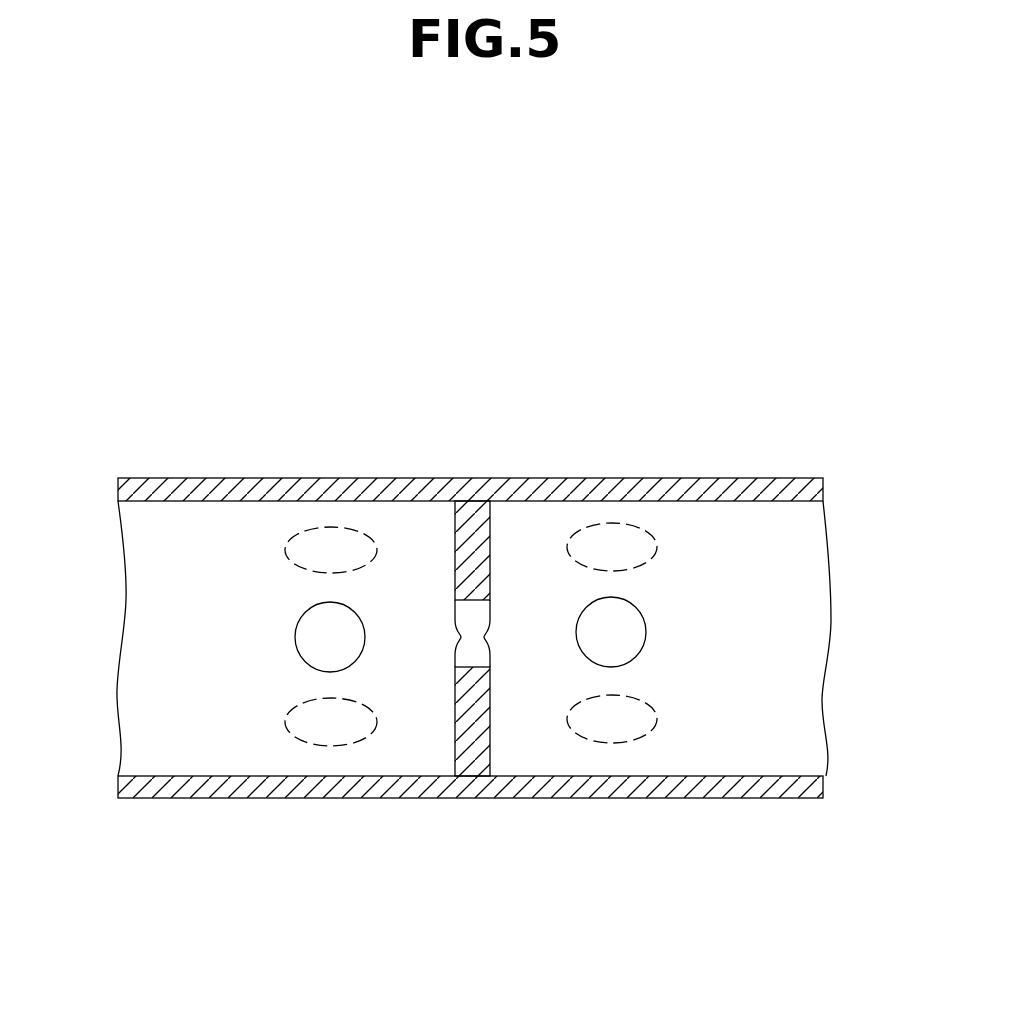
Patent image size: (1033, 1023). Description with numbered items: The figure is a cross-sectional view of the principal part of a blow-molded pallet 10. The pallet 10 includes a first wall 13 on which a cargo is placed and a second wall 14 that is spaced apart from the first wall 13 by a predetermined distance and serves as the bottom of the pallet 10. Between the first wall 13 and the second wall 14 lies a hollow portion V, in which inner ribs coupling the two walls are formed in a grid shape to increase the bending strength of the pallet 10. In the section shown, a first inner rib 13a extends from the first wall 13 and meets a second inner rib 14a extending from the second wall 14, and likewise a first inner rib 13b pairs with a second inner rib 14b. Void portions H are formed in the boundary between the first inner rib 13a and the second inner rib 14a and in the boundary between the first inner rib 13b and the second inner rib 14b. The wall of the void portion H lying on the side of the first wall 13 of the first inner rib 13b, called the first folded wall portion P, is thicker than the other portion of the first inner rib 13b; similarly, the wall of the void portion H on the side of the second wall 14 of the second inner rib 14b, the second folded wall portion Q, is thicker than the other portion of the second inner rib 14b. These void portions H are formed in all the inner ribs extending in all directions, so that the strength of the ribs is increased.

The pallet 10 is at (724, 428).
The first wall 13 is at (525, 478).
The first inner rib 13a is at (455, 548).
The first inner rib 13b is at (220, 560).
The second wall 14 is at (718, 798).
The second inner rib 14a is at (492, 733).
The second inner rib 14b is at (192, 712).
The first folded wall portion P is at (300, 530).
The second folded wall portion Q is at (354, 742).
The void portion H is at (315, 668).
The hollow portion V is at (772, 672).